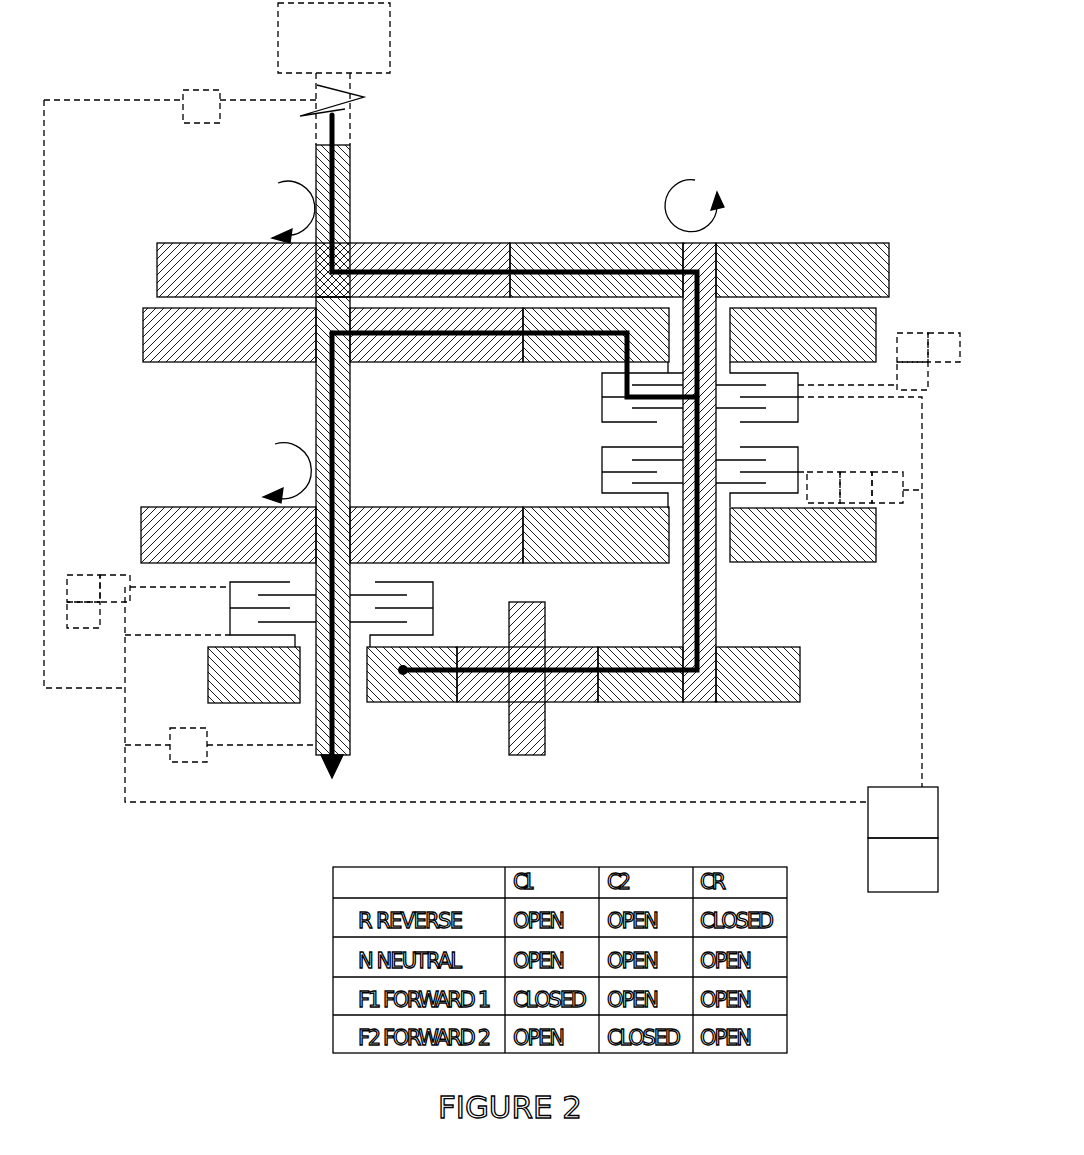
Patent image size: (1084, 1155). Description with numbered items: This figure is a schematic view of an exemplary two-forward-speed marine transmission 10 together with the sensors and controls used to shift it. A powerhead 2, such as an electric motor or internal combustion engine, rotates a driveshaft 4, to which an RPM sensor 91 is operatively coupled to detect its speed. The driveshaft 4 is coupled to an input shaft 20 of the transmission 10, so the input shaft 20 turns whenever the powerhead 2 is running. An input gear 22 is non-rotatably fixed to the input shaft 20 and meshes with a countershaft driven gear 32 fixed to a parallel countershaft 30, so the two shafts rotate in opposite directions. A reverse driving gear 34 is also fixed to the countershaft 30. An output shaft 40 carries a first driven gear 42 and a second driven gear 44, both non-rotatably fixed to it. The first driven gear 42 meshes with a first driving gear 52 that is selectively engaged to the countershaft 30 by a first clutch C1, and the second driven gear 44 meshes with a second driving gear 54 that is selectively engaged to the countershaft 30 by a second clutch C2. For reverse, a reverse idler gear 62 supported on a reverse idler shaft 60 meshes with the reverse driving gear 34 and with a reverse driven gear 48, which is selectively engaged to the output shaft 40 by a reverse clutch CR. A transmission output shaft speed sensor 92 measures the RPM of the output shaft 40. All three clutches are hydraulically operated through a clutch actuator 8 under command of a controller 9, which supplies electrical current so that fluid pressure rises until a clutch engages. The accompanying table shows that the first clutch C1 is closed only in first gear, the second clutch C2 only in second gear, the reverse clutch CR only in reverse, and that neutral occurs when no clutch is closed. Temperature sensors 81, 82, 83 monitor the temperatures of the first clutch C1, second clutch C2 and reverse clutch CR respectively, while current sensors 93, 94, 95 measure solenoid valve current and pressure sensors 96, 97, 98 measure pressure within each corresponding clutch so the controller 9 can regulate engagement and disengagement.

The powerhead 2 is at (340, 54).
The driveshaft 4 is at (340, 107).
The transmission 10 is at (765, 110).
The input shaft 20 is at (342, 178).
The input gear 22 is at (425, 243).
The countershaft 30 is at (700, 243).
The countershaft driven gear 32 is at (843, 243).
The reverse driving gear 34 is at (748, 690).
The output shaft 40 is at (322, 757).
The first driven gear 42 is at (141, 540).
The second driven gear 44 is at (143, 343).
The reverse driven gear 48 is at (212, 692).
The first driving gear 52 is at (800, 558).
The second driving gear 54 is at (870, 326).
The reverse idler shaft 60 is at (527, 753).
The reverse idler gear 62 is at (572, 695).
The clutch actuator 8 is at (911, 827).
The controller 9 is at (903, 865).
The temperature sensor 81 is at (887, 487).
The temperature sensor 82 is at (944, 347).
The temperature sensor 83 is at (83, 615).
The RPM sensor 91 is at (201, 106).
The transmission output shaft speed sensor 92 is at (188, 745).
The current sensor 93 is at (823, 487).
The current sensor 94 is at (912, 347).
The current sensor 95 is at (83, 588).
The pressure sensor 96 is at (856, 487).
The pressure sensor 97 is at (912, 376).
The pressure sensor 98 is at (115, 588).
The first clutch C1 is at (800, 458).
The second clutch C2 is at (800, 385).
The reverse clutch CR is at (230, 609).